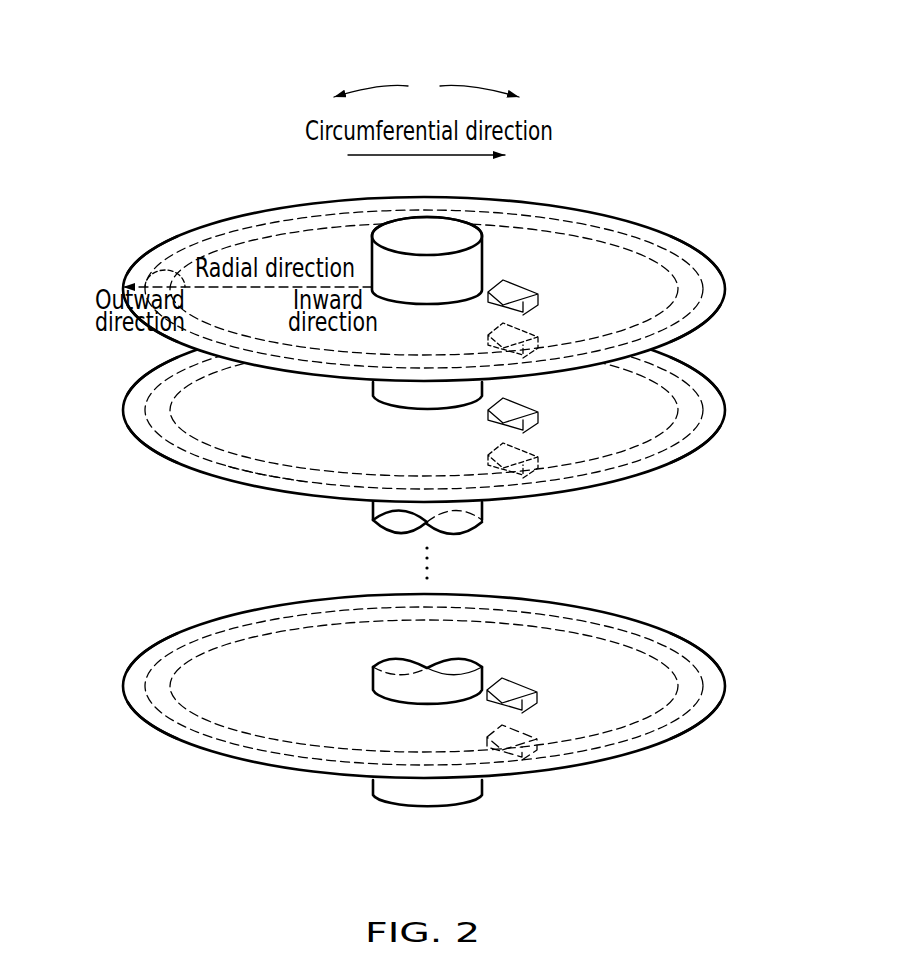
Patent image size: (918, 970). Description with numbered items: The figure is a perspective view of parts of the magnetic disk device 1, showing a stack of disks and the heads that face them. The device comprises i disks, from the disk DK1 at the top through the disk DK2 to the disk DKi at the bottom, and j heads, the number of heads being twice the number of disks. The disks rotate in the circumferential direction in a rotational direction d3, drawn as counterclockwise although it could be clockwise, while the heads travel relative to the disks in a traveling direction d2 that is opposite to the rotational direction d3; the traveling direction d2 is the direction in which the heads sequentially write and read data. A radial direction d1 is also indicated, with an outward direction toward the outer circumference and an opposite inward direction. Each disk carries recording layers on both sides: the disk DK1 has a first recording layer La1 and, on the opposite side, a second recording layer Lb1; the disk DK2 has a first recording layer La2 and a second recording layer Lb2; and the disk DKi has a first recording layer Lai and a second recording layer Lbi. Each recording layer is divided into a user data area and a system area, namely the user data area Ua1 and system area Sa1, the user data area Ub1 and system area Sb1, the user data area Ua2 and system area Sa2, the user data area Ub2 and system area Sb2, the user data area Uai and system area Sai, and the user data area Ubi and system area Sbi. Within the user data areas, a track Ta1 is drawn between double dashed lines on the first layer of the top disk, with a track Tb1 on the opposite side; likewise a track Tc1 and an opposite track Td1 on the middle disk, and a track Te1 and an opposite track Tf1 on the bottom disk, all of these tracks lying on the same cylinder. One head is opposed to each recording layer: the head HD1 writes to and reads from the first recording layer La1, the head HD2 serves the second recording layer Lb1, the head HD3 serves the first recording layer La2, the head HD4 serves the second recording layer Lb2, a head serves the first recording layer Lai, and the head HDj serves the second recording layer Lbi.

The magnetic disk device 1 is at (766, 58).
The radial direction d1 is at (142, 268).
The traveling direction d2 is at (468, 87).
The rotational direction d3 is at (360, 87).
The disk DK1 is at (266, 206).
The disk DK2 is at (258, 490).
The disk DKi is at (266, 769).
The track Ta1 is at (221, 232).
The track Tb1 is at (240, 356).
The track Tc1 is at (165, 379).
The track Td1 is at (216, 464).
The track Te1 is at (229, 631).
The track Tf1 is at (214, 744).
The first recording layer La1 is at (156, 246).
The second recording layer Lb1 is at (165, 343).
The first recording layer La2 is at (126, 395).
The second recording layer Lb2 is at (128, 442).
The first recording layer Lai is at (128, 670).
The second recording layer Lbi is at (132, 718).
The system area Sa1 is at (709, 257).
The system area Sb1 is at (729, 305).
The system area Sa2 is at (711, 400).
The system area Sb2 is at (716, 440).
The system area Sai is at (711, 670).
The system area Sbi is at (713, 727).
The user data area Ua1 is at (638, 275).
The user data area Ub1 is at (311, 388).
The user data area Ua2 is at (580, 437).
The user data area Ub2 is at (648, 479).
The user data area Uai is at (638, 696).
The user data area Ubi is at (653, 758).
The head HD1 is at (524, 288).
The head HD2 is at (527, 336).
The head HD3 is at (489, 420).
The head HD4 is at (488, 453).
The head HDj is at (487, 737).